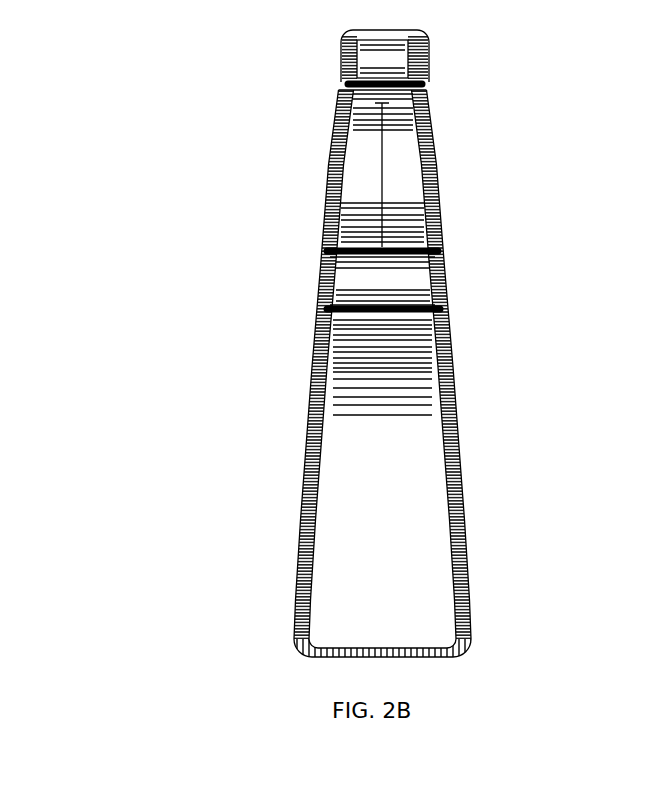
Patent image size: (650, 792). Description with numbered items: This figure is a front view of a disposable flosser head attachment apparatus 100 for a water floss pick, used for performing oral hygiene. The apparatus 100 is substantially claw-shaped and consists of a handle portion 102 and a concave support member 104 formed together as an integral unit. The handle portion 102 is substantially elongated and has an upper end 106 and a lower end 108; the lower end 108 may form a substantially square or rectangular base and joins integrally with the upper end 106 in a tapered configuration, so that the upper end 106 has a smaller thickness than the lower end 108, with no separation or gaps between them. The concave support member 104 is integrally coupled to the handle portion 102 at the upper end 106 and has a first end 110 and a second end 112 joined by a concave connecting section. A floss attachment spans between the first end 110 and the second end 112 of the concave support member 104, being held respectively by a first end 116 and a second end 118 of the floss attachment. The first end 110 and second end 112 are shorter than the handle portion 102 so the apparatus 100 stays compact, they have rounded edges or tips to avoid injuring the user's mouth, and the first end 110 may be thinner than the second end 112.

The disposable flosser head attachment apparatus 100 is at (122, 133).
The handle portion 102 is at (478, 522).
The concave support member 104 is at (445, 178).
The upper end 106 is at (342, 334).
The lower end 108 is at (322, 617).
The first end 110 is at (390, 62).
The second end 112 is at (418, 272).
The first end of the floss attachment 116 is at (382, 147).
The second end of the floss attachment 118 is at (382, 232).